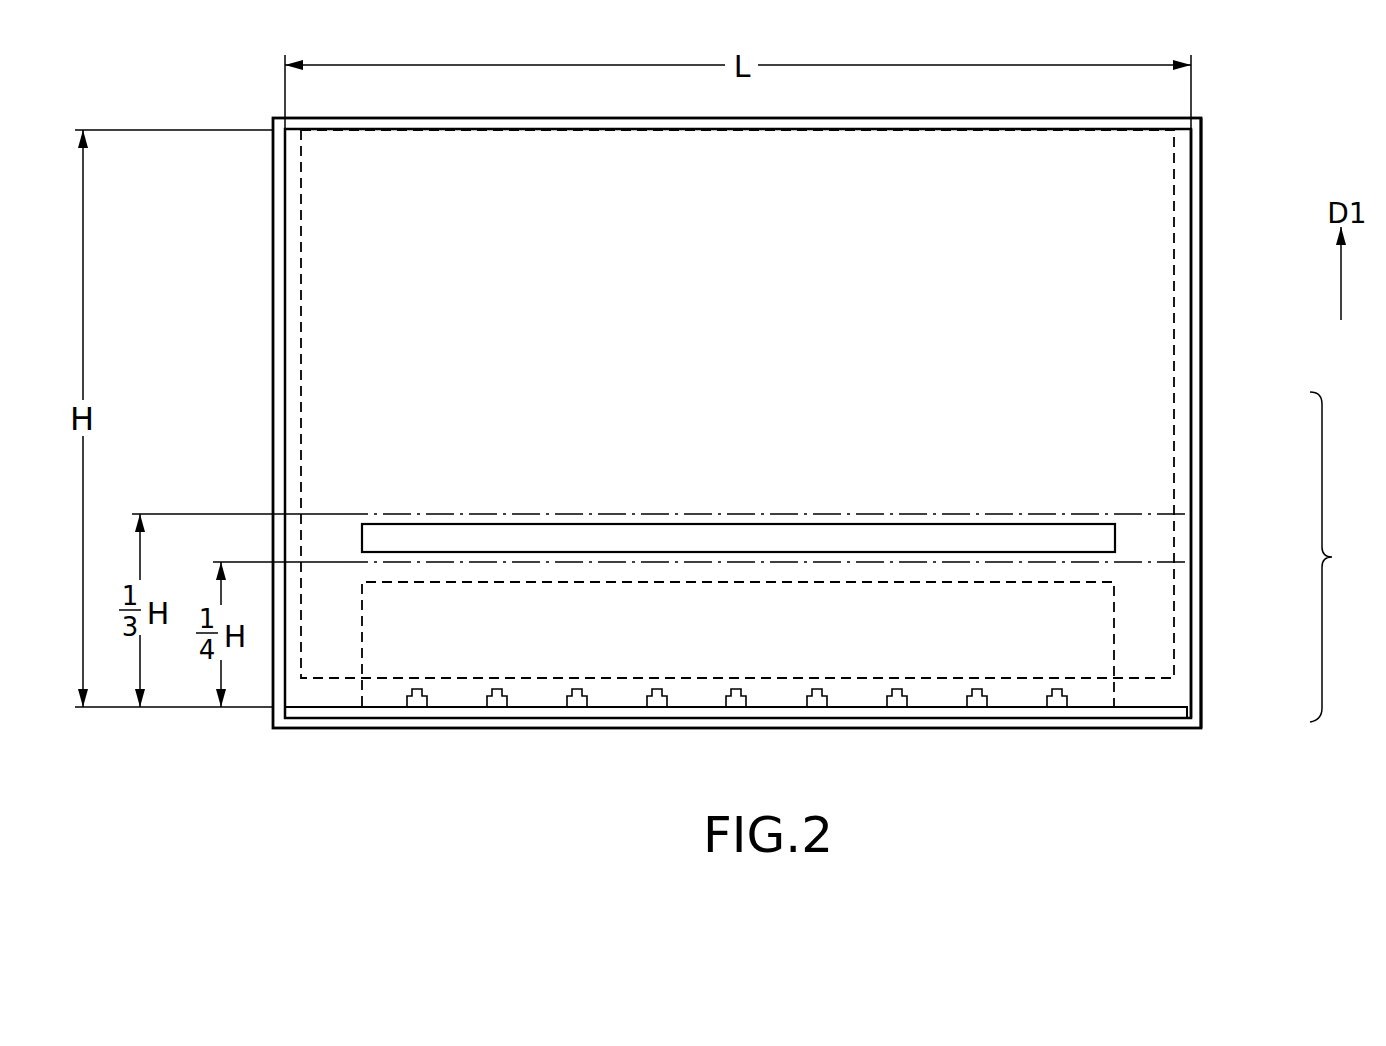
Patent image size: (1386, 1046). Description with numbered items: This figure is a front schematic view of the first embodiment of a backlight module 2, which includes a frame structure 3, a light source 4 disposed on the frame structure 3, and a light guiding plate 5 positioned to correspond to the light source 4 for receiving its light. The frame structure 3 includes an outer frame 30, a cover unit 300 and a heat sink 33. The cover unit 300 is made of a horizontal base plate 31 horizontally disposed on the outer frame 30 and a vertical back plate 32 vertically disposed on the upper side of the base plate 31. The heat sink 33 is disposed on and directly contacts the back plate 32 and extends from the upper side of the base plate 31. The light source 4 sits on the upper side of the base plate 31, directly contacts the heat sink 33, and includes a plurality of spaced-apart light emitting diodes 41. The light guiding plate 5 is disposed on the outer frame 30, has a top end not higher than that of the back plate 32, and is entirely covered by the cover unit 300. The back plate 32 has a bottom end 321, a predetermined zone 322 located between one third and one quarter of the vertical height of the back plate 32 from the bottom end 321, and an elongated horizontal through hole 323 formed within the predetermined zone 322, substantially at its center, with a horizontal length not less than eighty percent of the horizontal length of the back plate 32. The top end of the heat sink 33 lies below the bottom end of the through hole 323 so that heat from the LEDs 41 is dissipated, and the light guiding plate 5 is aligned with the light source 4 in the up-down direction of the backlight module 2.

The backlight module 2 is at (1244, 120).
The frame structure 3 is at (1232, 244).
The outer frame 30 is at (1197, 312).
The horizontal base plate 31 is at (1190, 712).
The vertical back plate 32 is at (1208, 408).
The heat sink 33 is at (1117, 636).
The cover unit 300 is at (1348, 557).
The bottom end 321 is at (1134, 707).
The predetermined zone 322 is at (328, 524).
The elongated horizontal through hole 323 is at (522, 537).
The light source 4 is at (737, 758).
The light emitting diodes 41 is at (492, 708).
The light guiding plate 5 is at (302, 256).